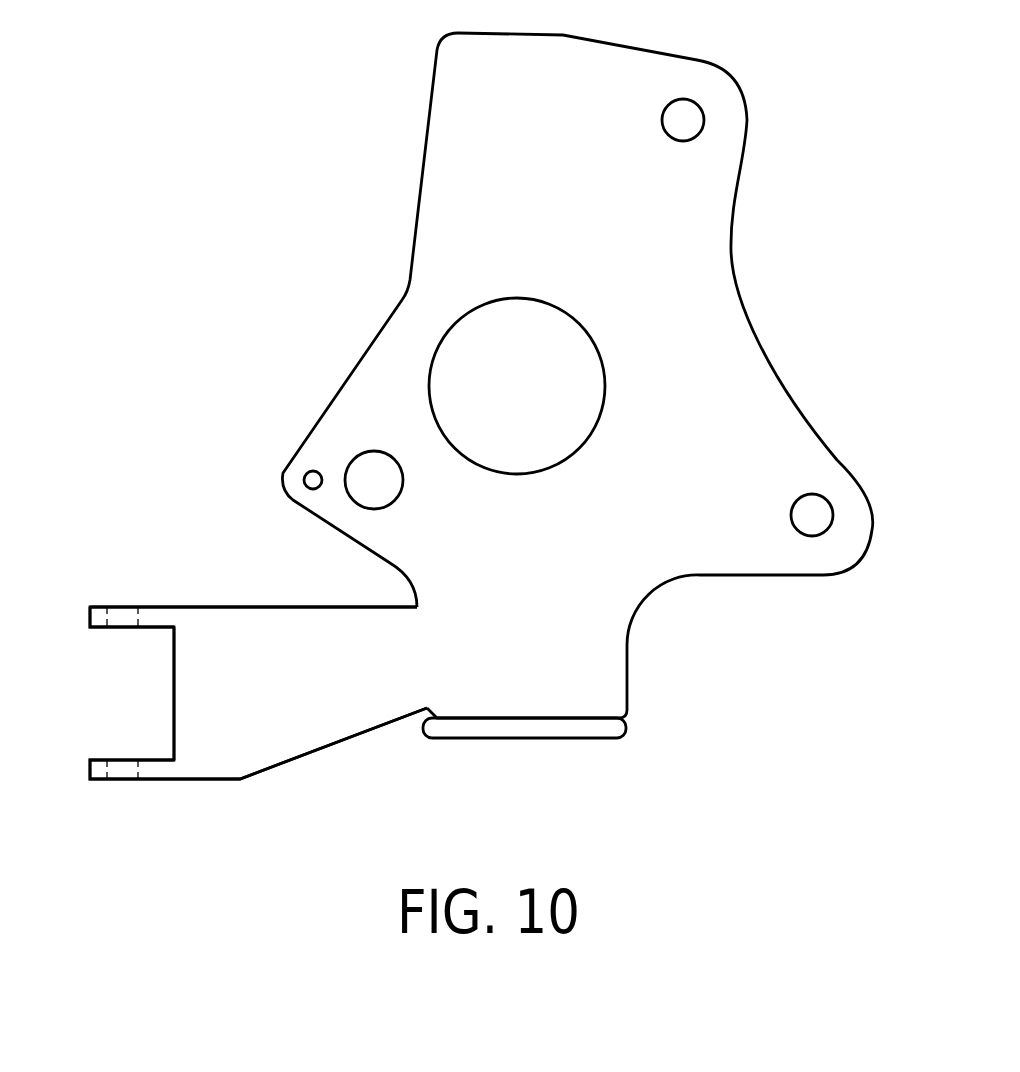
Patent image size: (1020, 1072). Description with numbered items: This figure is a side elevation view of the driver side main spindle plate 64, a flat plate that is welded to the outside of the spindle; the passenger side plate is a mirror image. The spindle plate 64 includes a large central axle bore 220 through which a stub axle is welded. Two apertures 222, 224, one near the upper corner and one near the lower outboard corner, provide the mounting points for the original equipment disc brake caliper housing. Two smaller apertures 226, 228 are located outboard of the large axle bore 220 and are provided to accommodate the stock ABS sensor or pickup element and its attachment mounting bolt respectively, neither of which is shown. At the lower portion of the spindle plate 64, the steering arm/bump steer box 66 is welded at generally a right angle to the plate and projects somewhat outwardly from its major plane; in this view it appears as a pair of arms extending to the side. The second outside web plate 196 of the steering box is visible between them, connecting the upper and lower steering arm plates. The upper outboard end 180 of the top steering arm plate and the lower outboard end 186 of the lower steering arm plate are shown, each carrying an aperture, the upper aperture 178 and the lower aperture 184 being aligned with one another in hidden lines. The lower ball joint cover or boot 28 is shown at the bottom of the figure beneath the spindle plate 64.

The main spindle plate 64 is at (432, 102).
The steering arm/bump steer box 66 is at (158, 568).
The lower ball joint cover 28 is at (627, 728).
The aperture 178 is at (118, 607).
The outboard end 180 is at (160, 607).
The aperture 184 is at (112, 768).
The outboard end 186 is at (188, 780).
The second outside web plate 196 is at (305, 693).
The central axle bore 220 is at (440, 353).
The aperture 222 is at (700, 128).
The aperture 224 is at (822, 530).
The smaller aperture 226 is at (368, 455).
The smaller aperture 228 is at (305, 478).